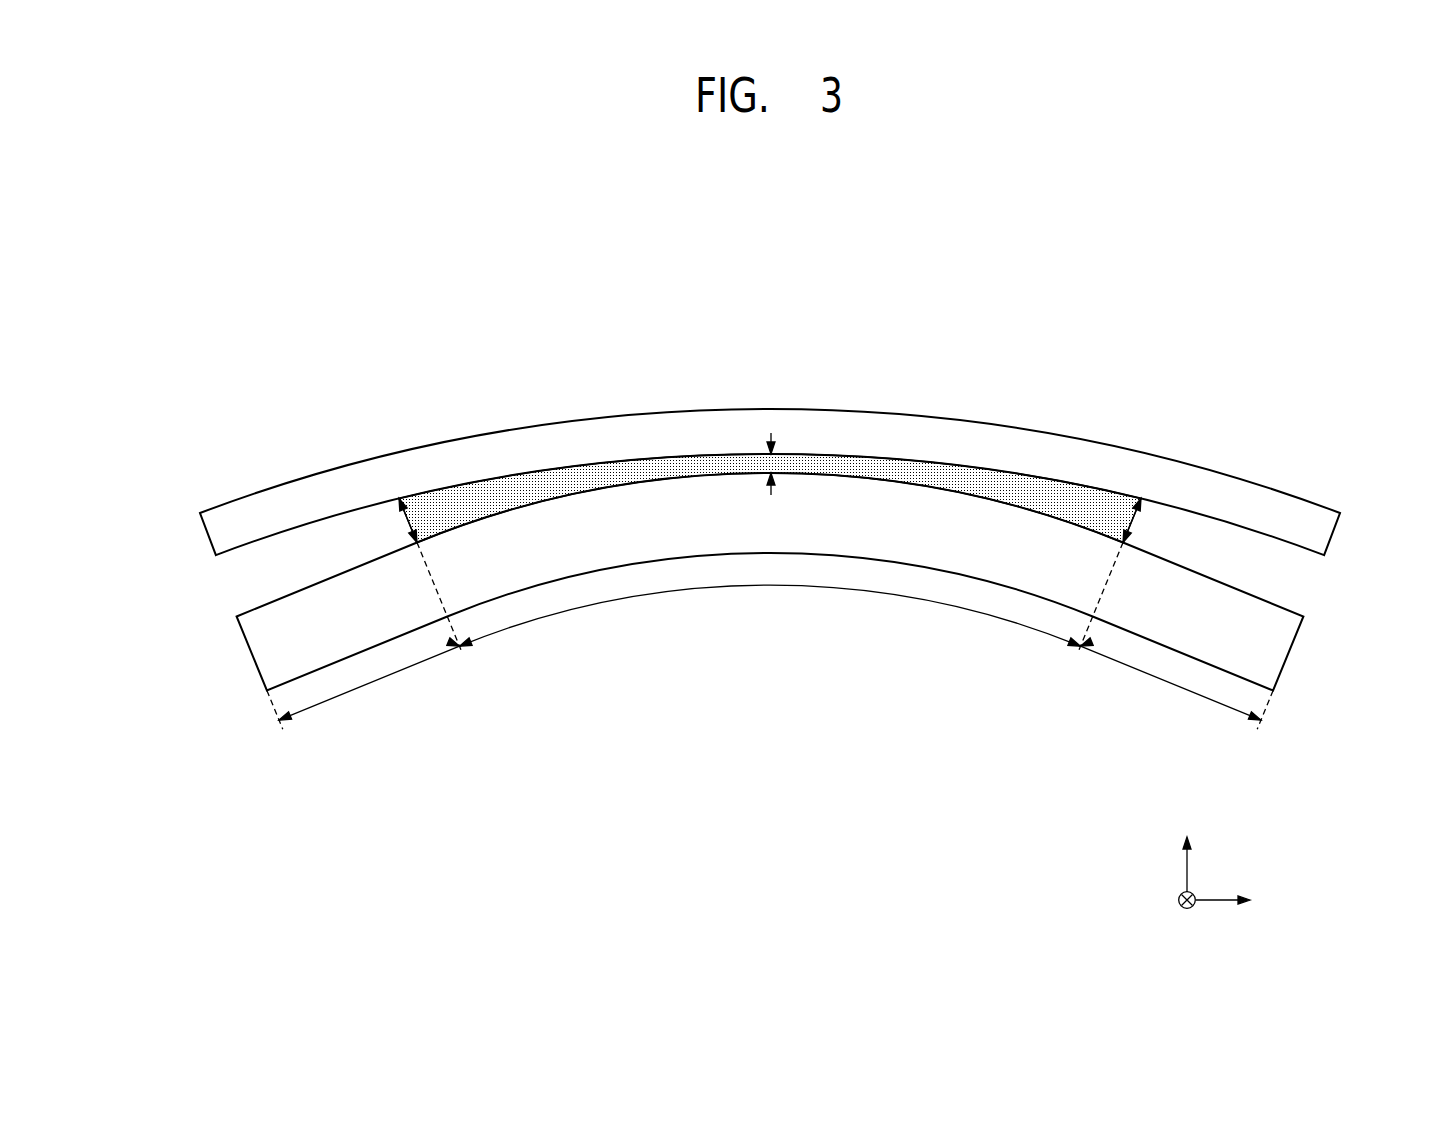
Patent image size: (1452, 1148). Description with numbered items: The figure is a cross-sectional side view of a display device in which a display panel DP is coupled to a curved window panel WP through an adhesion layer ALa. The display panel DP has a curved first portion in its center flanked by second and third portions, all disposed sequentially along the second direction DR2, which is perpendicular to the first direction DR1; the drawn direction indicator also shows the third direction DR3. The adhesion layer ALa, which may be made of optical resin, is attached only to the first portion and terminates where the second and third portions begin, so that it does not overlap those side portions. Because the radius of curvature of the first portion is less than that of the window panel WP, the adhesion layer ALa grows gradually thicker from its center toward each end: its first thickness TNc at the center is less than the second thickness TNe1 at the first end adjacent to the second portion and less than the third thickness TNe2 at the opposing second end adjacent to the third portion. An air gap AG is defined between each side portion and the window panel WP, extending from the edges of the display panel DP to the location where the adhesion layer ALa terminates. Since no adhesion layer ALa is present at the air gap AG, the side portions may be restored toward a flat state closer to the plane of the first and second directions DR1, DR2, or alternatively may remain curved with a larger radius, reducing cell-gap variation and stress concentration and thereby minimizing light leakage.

The window panel WP is at (1330, 533).
The display panel DP is at (1283, 647).
The adhesion layer ALa is at (638, 468).
The first thickness TNc is at (758, 466).
The second thickness TNe1 is at (402, 522).
The third thickness TNe2 is at (1138, 522).
The air gap AG is at (242, 584).
The first direction DR1 is at (1187, 915).
The second direction DR2 is at (1243, 900).
The third direction DR3 is at (1187, 852).